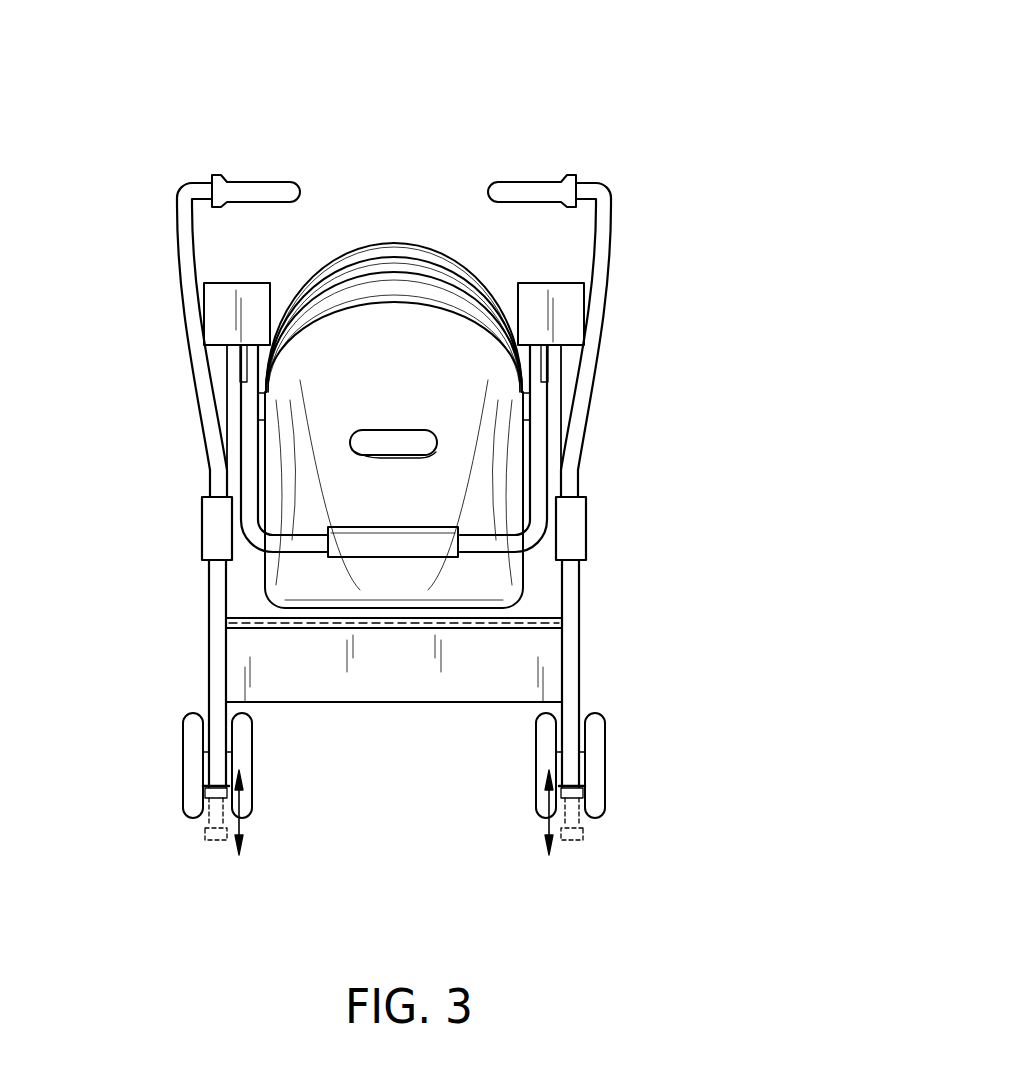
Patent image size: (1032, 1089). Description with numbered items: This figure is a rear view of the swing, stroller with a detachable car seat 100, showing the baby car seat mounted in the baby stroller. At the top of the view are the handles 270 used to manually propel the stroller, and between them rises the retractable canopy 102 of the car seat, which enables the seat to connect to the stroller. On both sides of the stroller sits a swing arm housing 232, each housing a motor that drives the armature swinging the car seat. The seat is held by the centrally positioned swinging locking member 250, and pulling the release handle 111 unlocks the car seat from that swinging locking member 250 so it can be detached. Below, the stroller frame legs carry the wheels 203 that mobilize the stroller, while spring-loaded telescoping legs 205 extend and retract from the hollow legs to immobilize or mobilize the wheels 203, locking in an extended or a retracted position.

The swing, stroller with a detachable car seat 100 is at (660, 110).
The handles 270 is at (527, 182).
The retractable canopy 102 is at (398, 243).
The swing arm housing 232 is at (233, 313).
The release handle 111 is at (411, 440).
The swinging locking member 250 is at (402, 545).
The wheels 203 is at (193, 728).
The telescoping legs 205 is at (207, 792).